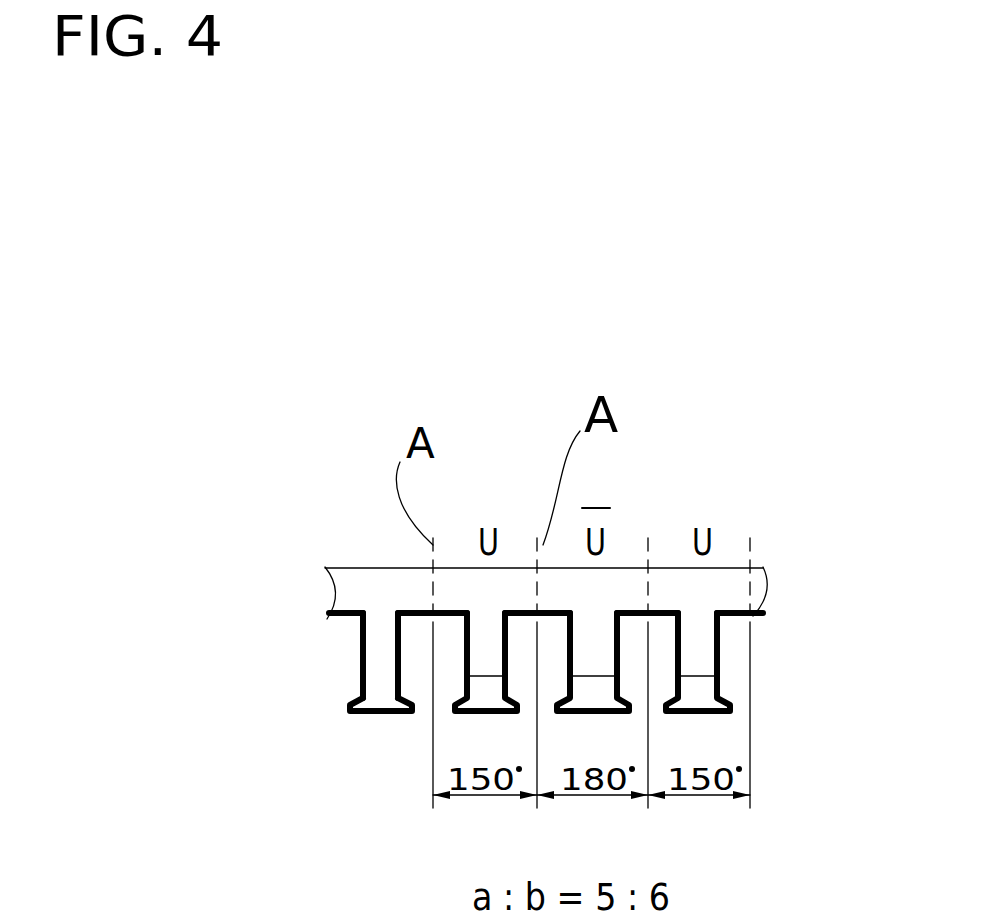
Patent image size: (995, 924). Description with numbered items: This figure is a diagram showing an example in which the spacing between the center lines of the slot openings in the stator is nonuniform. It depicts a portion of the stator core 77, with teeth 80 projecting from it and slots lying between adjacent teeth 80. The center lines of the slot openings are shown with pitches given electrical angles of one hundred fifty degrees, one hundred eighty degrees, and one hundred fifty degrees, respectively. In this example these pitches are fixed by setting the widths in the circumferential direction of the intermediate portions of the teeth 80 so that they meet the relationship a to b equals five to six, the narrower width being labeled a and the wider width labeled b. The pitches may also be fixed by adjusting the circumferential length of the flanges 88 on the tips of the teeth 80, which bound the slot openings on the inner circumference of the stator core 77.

The stator core 77 is at (620, 590).
The teeth 80 is at (381, 668).
The flanges 88 is at (355, 712).